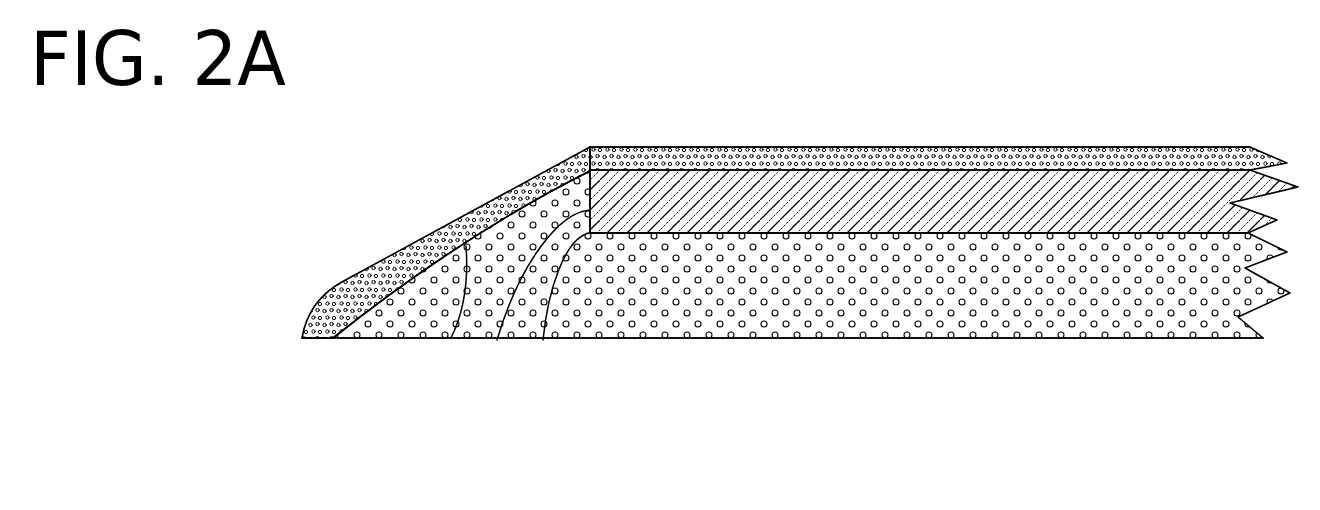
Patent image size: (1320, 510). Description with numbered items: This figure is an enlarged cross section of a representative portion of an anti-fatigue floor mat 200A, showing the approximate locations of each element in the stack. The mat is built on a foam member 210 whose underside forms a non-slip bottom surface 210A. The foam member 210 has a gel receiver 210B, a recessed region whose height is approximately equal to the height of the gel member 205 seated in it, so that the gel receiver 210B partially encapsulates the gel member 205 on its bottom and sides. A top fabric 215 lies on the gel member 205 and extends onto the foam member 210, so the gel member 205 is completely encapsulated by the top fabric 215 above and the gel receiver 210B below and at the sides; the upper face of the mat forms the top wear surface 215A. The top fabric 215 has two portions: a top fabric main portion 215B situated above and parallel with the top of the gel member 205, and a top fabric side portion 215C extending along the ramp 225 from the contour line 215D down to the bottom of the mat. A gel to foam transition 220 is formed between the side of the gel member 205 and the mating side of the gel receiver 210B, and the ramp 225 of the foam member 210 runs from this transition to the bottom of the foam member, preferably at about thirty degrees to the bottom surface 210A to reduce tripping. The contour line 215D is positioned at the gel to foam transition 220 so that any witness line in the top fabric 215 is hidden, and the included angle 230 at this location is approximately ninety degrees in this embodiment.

The mat 200A is at (1240, 100).
The gel member 205 is at (760, 197).
The foam member 210 is at (788, 298).
The non-slip bottom surface 210A is at (957, 338).
The gel receiver 210B is at (640, 237).
The top fabric 215 is at (667, 167).
The top wear surface 215A is at (885, 147).
The top fabric main portion 215B is at (982, 147).
The top fabric side portion 215C is at (463, 215).
The contour line 215D is at (587, 147).
The gel to foam transition 220 is at (497, 340).
The ramp 225 is at (451, 338).
The included angle 230 is at (543, 340).